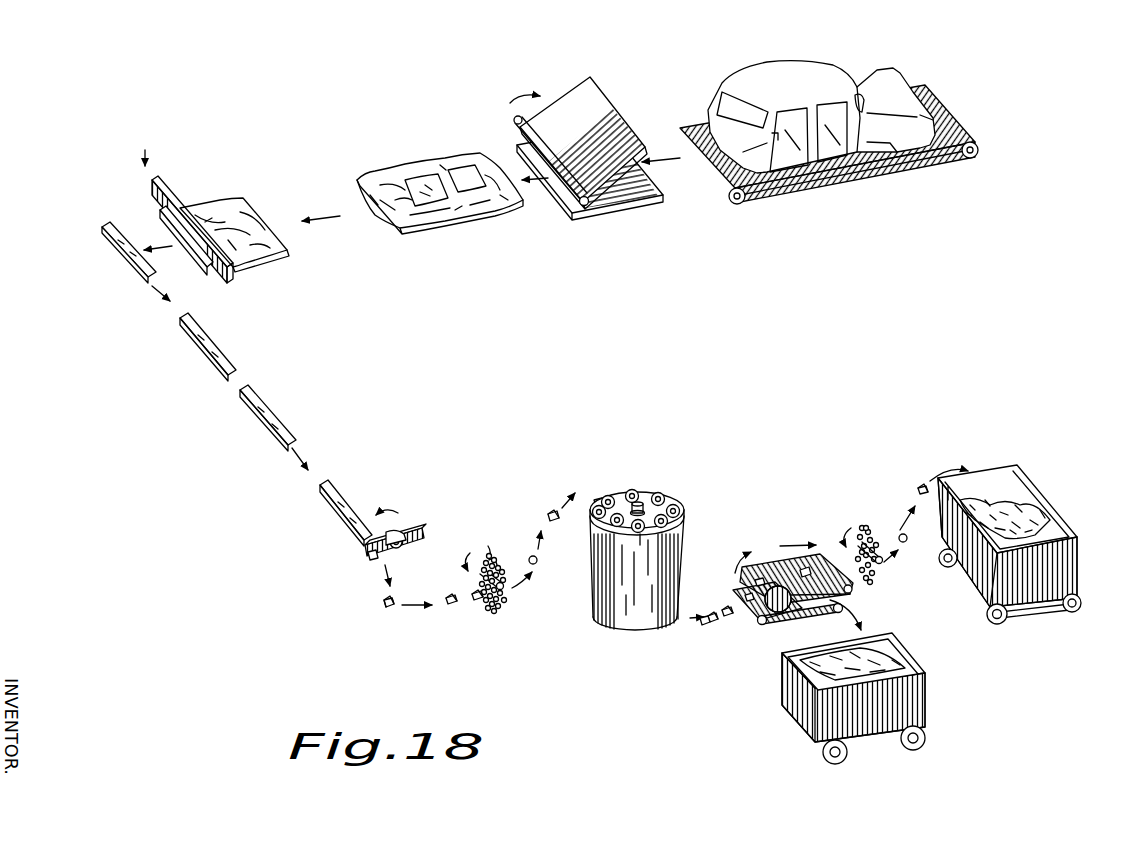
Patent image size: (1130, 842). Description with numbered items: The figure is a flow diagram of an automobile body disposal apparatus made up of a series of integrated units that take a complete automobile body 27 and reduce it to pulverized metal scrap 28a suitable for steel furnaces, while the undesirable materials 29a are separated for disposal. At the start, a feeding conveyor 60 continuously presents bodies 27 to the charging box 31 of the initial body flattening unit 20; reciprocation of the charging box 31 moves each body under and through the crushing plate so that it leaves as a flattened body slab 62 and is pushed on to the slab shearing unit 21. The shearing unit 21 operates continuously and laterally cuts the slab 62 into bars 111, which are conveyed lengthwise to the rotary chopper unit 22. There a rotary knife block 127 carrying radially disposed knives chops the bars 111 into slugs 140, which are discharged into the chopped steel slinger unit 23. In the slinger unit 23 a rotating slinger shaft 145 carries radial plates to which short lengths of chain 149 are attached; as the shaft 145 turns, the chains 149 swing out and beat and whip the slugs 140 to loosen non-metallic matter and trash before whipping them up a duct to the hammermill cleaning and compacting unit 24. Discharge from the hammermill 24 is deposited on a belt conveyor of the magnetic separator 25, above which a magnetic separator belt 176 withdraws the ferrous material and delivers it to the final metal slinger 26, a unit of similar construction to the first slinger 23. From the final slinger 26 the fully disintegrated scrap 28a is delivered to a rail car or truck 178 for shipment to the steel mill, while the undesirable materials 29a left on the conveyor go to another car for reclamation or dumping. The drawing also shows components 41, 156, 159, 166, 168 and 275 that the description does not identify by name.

The initial body flattening unit 20 is at (595, 143).
The slab shearing unit 21 is at (163, 180).
The rotary chopper unit 22 is at (410, 539).
The chopped steel slinger unit 23 is at (503, 609).
The hammermill cleaning and compacting unit 24 is at (657, 547).
The magnetic separator 25 is at (778, 586).
The final metal slinger 26 is at (866, 523).
The automobile body 27 is at (758, 70).
The pulverized metal scrap 28a is at (1022, 500).
The undesirable materials 29a is at (905, 666).
The charging box 31 is at (630, 198).
The upper press plate 41 is at (598, 98).
The feeding conveyor 60 is at (750, 203).
The flattened body slab 62 is at (412, 168).
The bars 111 is at (142, 277).
The rotary knife block 127 is at (406, 550).
The slugs 140 is at (388, 612).
The slinger shaft 145 is at (505, 590).
The short lengths of chain 149 is at (503, 577).
The drum body 156 is at (640, 628).
The center stud 159 is at (634, 492).
The nut 166 is at (660, 493).
The nut 168 is at (612, 496).
The magnetic separator belt 176 is at (768, 564).
The rail car or truck 178 is at (931, 609).
The lower shear base 275 is at (762, 618).